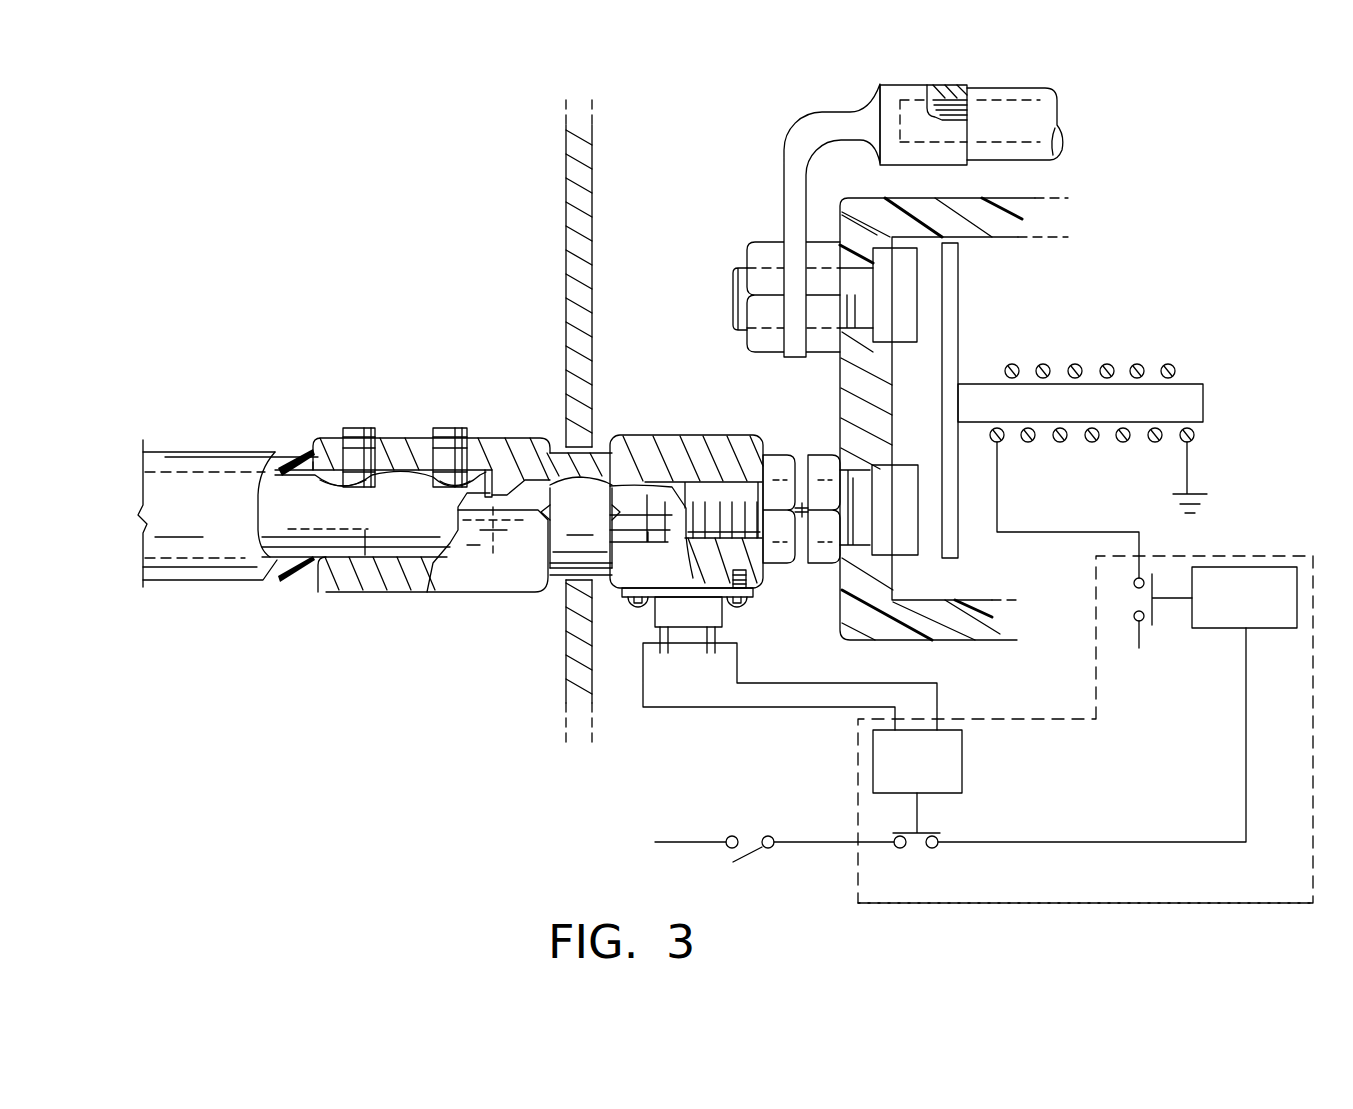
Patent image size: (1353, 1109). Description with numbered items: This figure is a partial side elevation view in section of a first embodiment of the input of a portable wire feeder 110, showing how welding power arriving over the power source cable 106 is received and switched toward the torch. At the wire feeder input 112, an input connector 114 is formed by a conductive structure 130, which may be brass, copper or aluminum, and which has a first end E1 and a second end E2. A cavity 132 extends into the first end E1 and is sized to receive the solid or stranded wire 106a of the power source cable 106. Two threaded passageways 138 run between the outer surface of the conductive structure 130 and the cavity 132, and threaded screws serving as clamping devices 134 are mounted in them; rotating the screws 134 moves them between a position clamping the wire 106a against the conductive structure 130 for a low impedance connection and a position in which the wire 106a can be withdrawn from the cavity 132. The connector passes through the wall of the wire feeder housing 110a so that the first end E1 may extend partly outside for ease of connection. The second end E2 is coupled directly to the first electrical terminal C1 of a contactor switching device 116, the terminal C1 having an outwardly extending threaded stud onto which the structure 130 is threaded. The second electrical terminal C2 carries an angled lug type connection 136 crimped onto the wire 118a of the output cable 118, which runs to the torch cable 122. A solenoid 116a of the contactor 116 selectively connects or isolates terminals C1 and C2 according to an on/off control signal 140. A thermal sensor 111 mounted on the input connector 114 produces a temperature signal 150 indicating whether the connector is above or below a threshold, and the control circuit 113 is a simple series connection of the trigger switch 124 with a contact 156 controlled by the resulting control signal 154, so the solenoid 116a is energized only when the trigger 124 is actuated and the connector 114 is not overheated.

The power source cable 106 is at (173, 580).
The wire of power source cable 106a is at (217, 470).
The portable wire feeder 110 is at (560, 180).
The wire feeder housing 110a is at (575, 402).
The thermal sensor 111 is at (663, 612).
The wire feeder input 112 is at (620, 306).
The control circuit 113 is at (1076, 907).
The input connector 114 is at (478, 600).
The contactor switching device 116 is at (830, 206).
The solenoid 116a is at (1093, 340).
The output cable 118 is at (1037, 88).
The wire of output cable 118a is at (927, 105).
The torch cable 122 is at (835, 835).
The trigger switch 124 is at (753, 860).
The conductive structure 130 is at (403, 593).
The cavity 132 is at (415, 548).
The clamping device 134 is at (352, 440).
The angled lug type connection 136 is at (907, 83).
The threaded passageway 138 is at (363, 428).
The on/off control signal 140 is at (1253, 567).
The temperature signal 150 is at (785, 707).
The control signal 154 is at (962, 770).
The contact 156 is at (917, 850).
The first end E1 is at (332, 592).
The second end E2 is at (667, 433).
The first electrical terminal C1 is at (907, 547).
The second electrical terminal C2 is at (903, 328).